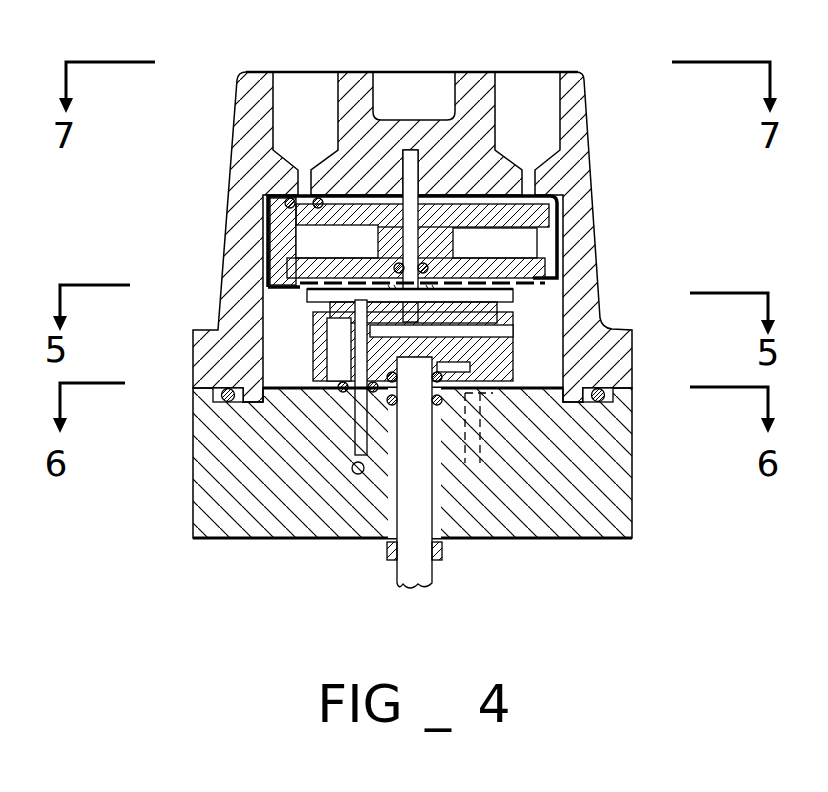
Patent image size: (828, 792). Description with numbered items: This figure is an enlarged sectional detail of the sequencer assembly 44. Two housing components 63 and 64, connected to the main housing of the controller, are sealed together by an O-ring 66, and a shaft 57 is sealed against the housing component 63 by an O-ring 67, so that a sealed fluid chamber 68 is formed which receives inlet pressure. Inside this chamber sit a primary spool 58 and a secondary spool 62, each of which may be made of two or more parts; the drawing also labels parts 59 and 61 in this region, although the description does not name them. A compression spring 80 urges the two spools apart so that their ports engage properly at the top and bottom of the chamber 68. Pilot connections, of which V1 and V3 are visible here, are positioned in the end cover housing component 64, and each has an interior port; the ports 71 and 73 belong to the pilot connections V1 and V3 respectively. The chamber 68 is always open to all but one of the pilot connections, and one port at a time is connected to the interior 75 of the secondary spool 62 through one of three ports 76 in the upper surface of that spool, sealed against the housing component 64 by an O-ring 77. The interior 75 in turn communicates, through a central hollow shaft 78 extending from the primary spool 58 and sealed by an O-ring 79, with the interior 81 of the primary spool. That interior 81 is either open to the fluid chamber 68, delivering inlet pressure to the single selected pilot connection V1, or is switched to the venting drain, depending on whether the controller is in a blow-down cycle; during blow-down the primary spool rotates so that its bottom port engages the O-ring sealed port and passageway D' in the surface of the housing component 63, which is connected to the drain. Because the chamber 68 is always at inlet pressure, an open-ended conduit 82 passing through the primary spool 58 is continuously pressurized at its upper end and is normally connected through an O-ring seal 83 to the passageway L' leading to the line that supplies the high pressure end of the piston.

The sequencer assembly 44 is at (232, 66).
The shaft 57 is at (415, 518).
The primary spool 58 is at (515, 307).
The diaphragm 59 is at (520, 287).
The retainer ring 61 is at (547, 264).
The secondary spool 62 is at (560, 222).
The housing component 63 is at (632, 531).
The end cover housing component 64 is at (585, 142).
The O-ring 66 is at (221, 396).
The O-ring 67 is at (446, 408).
The fluid chamber 68 is at (290, 348).
The port 71 is at (303, 184).
The port 73 is at (534, 188).
The interior of the secondary spool 75 is at (306, 245).
The ports 76 is at (288, 216).
The O-ring 77 is at (285, 201).
The central hollow shaft 78 is at (408, 262).
The O-ring 79 is at (433, 266).
The compression spring 80 is at (382, 272).
The interior of the primary spool 81 is at (490, 340).
The conduit 82 is at (353, 337).
The O-ring seal 83 is at (343, 390).
The pilot connection V1 is at (337, 104).
The pilot connection V3 is at (557, 94).
The passageway L' is at (323, 470).
The port and passageway D' is at (512, 439).